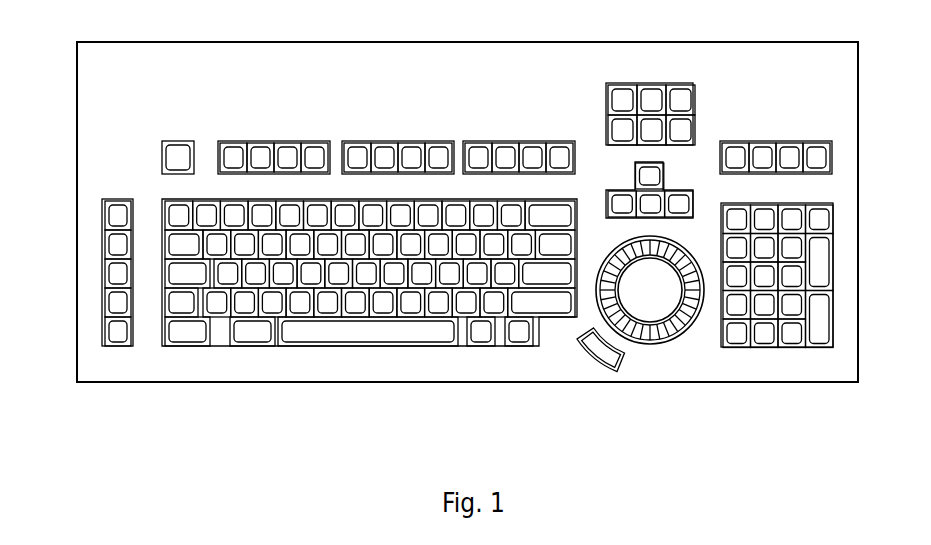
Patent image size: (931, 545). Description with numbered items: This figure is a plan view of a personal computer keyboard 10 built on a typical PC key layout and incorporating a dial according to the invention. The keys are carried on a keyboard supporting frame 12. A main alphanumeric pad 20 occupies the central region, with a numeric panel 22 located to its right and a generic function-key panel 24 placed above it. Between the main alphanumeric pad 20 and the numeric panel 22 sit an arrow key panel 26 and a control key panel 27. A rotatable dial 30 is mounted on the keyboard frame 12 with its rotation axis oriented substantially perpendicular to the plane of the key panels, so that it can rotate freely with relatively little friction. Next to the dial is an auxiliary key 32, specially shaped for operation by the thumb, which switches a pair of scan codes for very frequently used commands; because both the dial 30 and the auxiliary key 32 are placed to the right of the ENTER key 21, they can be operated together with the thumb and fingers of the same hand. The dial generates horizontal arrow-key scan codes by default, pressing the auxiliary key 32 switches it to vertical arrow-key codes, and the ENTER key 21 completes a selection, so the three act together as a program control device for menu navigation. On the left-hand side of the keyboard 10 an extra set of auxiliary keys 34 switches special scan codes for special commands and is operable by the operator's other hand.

The keyboard 10 is at (188, 397).
The keyboard supporting frame 12 is at (432, 67).
The main alphanumeric pad 20 is at (385, 315).
The ENTER key 21 is at (558, 275).
The numeric panel 22 is at (803, 361).
The function-key panel 24 is at (505, 143).
The arrow key panel 26 is at (687, 187).
The control key panel 27 is at (698, 92).
The rotatable dial 30 is at (685, 342).
The auxiliary key 32 is at (597, 367).
The auxiliary keys 34 is at (98, 272).